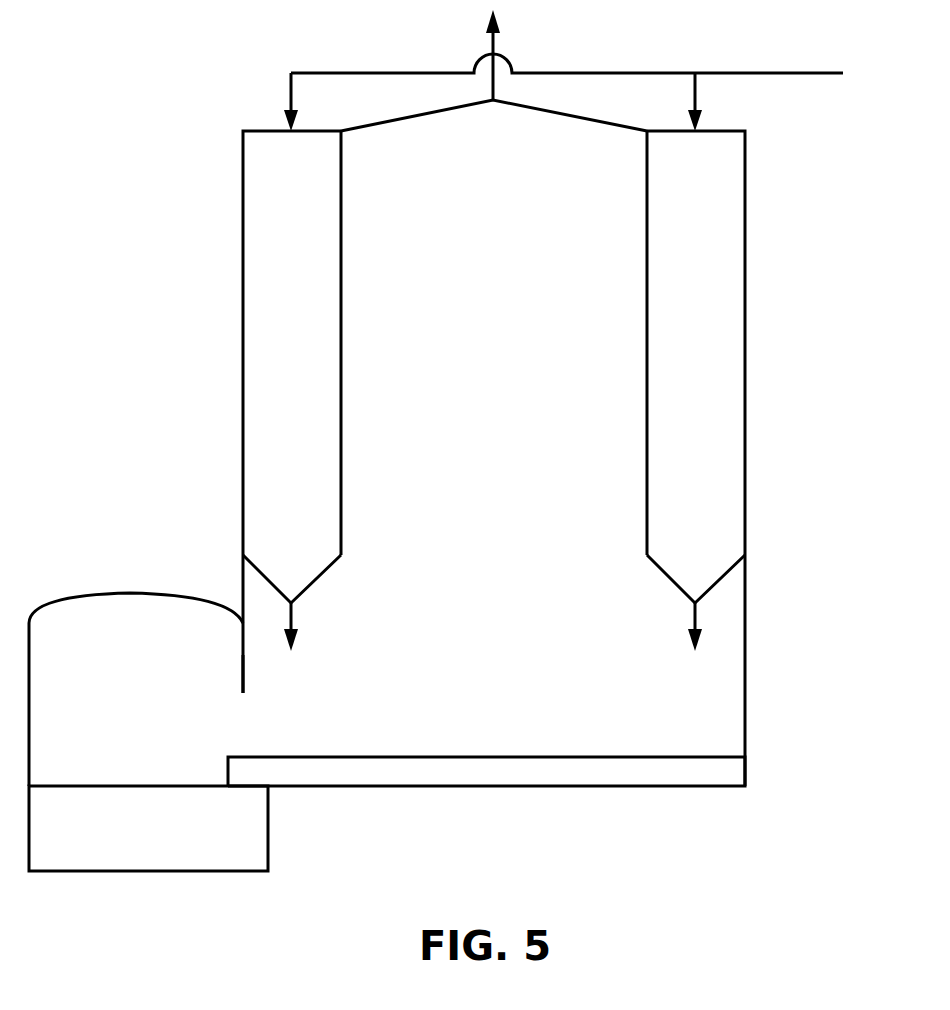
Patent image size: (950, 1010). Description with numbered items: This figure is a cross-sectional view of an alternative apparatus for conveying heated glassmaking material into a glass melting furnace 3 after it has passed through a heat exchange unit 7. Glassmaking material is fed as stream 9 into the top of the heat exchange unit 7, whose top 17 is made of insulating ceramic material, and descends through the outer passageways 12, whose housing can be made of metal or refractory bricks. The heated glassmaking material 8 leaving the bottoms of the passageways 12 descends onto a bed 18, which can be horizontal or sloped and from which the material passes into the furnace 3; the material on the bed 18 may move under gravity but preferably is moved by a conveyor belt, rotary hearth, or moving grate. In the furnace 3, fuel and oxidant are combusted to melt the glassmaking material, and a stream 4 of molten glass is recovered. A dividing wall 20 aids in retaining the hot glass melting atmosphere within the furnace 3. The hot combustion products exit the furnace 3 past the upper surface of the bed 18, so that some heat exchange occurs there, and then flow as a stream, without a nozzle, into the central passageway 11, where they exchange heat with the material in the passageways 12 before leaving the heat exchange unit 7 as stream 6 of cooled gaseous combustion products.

The glass melting furnace 3 is at (120, 687).
The stream of molten glass 4 is at (144, 837).
The stream of cooled gaseous combustion products 6 is at (494, 45).
The heat exchange unit 7 is at (772, 259).
The heated glassmaking material 8 is at (292, 617).
The stream of glassmaking material 9 is at (375, 72).
The passageway 11 is at (486, 315).
The passageways 12 is at (282, 315).
The top 17 is at (393, 117).
The bed 18 is at (460, 756).
The dividing wall 20 is at (242, 663).